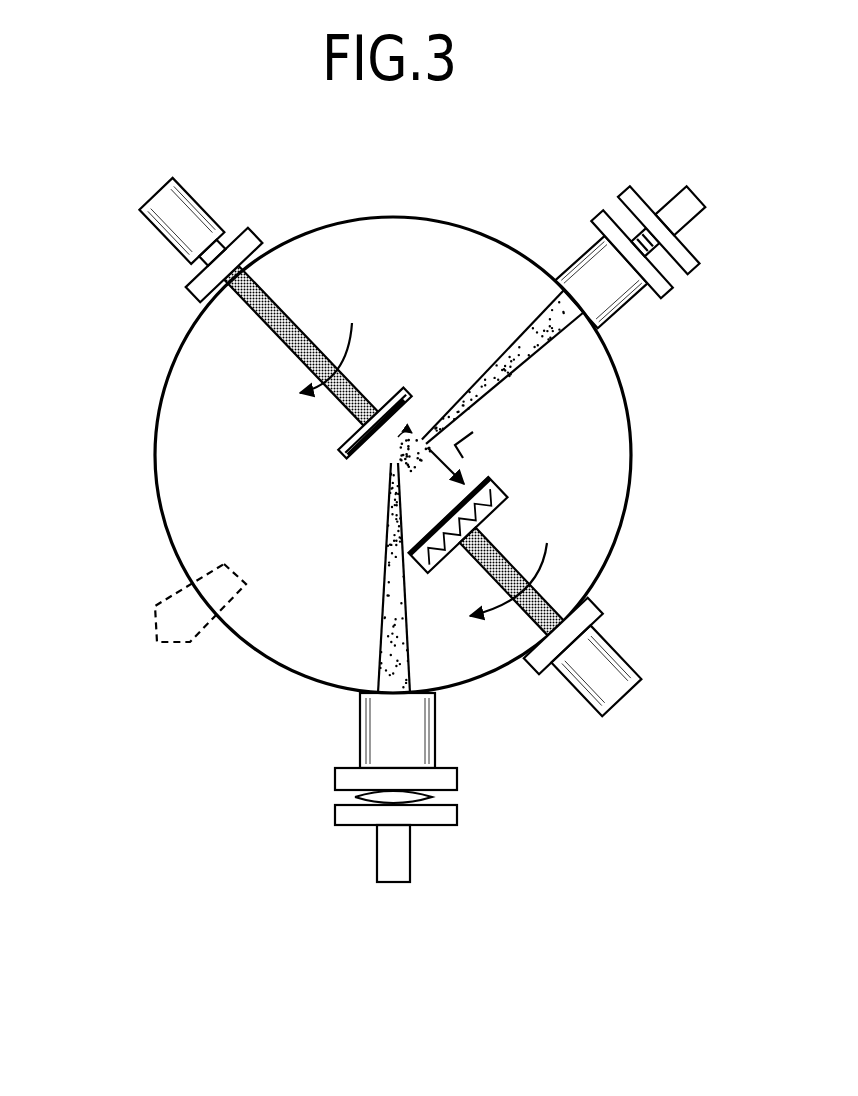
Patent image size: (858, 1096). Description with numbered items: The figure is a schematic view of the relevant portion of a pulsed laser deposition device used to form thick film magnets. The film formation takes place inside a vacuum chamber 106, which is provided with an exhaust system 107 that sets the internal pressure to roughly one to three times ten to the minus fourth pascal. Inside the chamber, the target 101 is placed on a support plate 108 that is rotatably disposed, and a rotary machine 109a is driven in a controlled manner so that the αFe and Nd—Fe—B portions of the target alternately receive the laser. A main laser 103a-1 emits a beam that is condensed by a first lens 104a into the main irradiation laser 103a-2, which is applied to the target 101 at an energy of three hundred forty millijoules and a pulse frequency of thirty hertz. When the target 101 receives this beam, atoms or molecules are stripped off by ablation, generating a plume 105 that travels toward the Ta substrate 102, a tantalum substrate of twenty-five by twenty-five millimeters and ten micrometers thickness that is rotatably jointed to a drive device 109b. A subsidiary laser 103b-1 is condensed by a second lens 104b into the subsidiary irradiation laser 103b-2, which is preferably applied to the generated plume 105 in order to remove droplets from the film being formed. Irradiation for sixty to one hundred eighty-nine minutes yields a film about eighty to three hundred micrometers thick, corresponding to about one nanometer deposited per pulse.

The target 101 is at (396, 449).
The Ta substrate 102 is at (500, 470).
The main laser 103a-1 is at (388, 837).
The main irradiation laser 103a-2 is at (403, 612).
The subsidiary laser 103b-1 is at (685, 212).
The subsidiary irradiation laser 103b-2 is at (522, 352).
The first lens 104a is at (433, 798).
The second lens 104b is at (657, 265).
The plume 105 is at (421, 450).
The vacuum chamber 106 is at (160, 397).
The exhaust system 107 is at (171, 630).
The support plate 108 is at (397, 425).
The rotary machine 109a is at (187, 222).
The drive device 109b is at (605, 677).